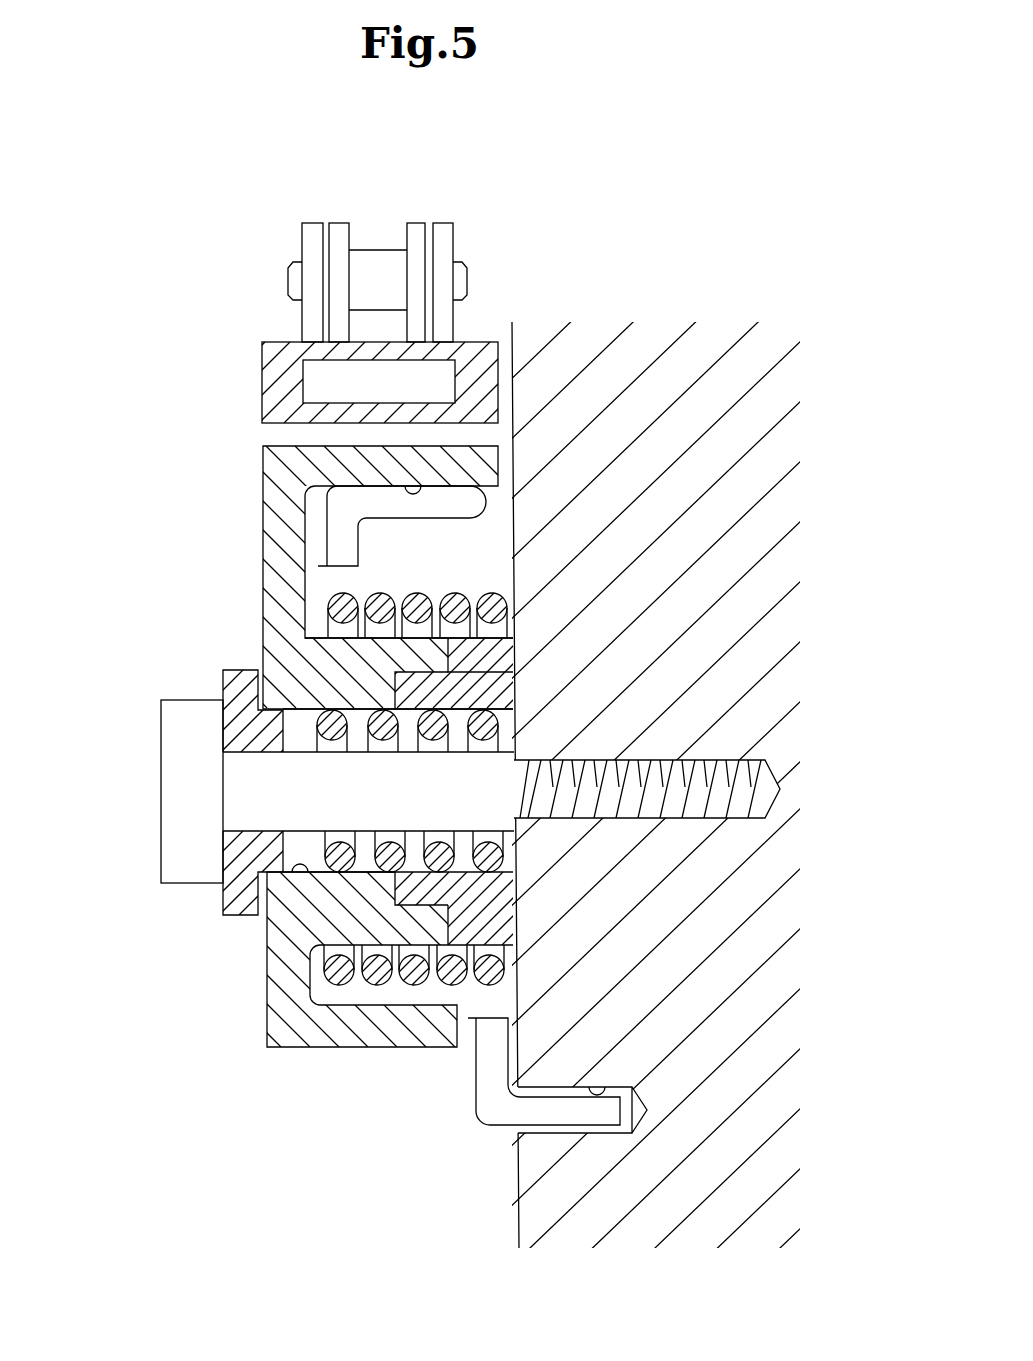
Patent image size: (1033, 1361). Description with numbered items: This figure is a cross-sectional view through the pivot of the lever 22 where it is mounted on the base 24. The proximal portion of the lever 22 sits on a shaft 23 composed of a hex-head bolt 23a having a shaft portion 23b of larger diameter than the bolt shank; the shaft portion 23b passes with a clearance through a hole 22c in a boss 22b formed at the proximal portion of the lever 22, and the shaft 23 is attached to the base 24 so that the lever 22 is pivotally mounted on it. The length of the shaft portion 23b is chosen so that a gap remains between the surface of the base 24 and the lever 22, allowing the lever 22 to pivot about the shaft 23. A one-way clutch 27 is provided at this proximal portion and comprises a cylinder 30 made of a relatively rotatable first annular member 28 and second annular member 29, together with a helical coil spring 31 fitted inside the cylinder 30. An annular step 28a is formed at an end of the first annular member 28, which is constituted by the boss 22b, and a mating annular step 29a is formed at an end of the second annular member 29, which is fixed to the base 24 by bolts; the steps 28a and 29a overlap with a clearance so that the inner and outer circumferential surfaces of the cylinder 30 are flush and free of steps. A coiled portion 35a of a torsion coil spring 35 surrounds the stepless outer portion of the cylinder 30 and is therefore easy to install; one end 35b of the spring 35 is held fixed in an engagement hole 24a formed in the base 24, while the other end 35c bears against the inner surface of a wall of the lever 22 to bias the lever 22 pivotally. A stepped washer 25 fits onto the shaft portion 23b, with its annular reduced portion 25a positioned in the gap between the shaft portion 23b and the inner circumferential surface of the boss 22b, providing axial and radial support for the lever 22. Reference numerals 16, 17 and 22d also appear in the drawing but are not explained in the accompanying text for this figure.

The connector 16 is at (376, 208).
The holder block 17 is at (278, 372).
The lever 22 is at (382, 575).
The boss 22b is at (396, 955).
The hole 22c is at (294, 874).
The recess 22d is at (418, 485).
The shaft 23 is at (414, 783).
The hex-head bolt 23a is at (183, 775).
The shaft portion 23b is at (248, 803).
The base 24 is at (655, 699).
The engagement hole 24a is at (597, 1097).
The stepped washer 25 is at (232, 794).
The annular reduced portion 25a is at (273, 852).
The one-way clutch 27 is at (314, 596).
The first annular member 28 is at (375, 912).
The annular step 28a is at (430, 655).
The second annular member 29 is at (487, 890).
The mating annular step 29a is at (412, 689).
The cylinder 30 is at (415, 764).
The helical coil spring 31 is at (335, 655).
The torsion coil spring 35 is at (500, 606).
The coiled portion 35a is at (380, 588).
The one end of the torsion coil spring 35b is at (570, 1115).
The other end of the torsion coil spring 35c is at (466, 507).